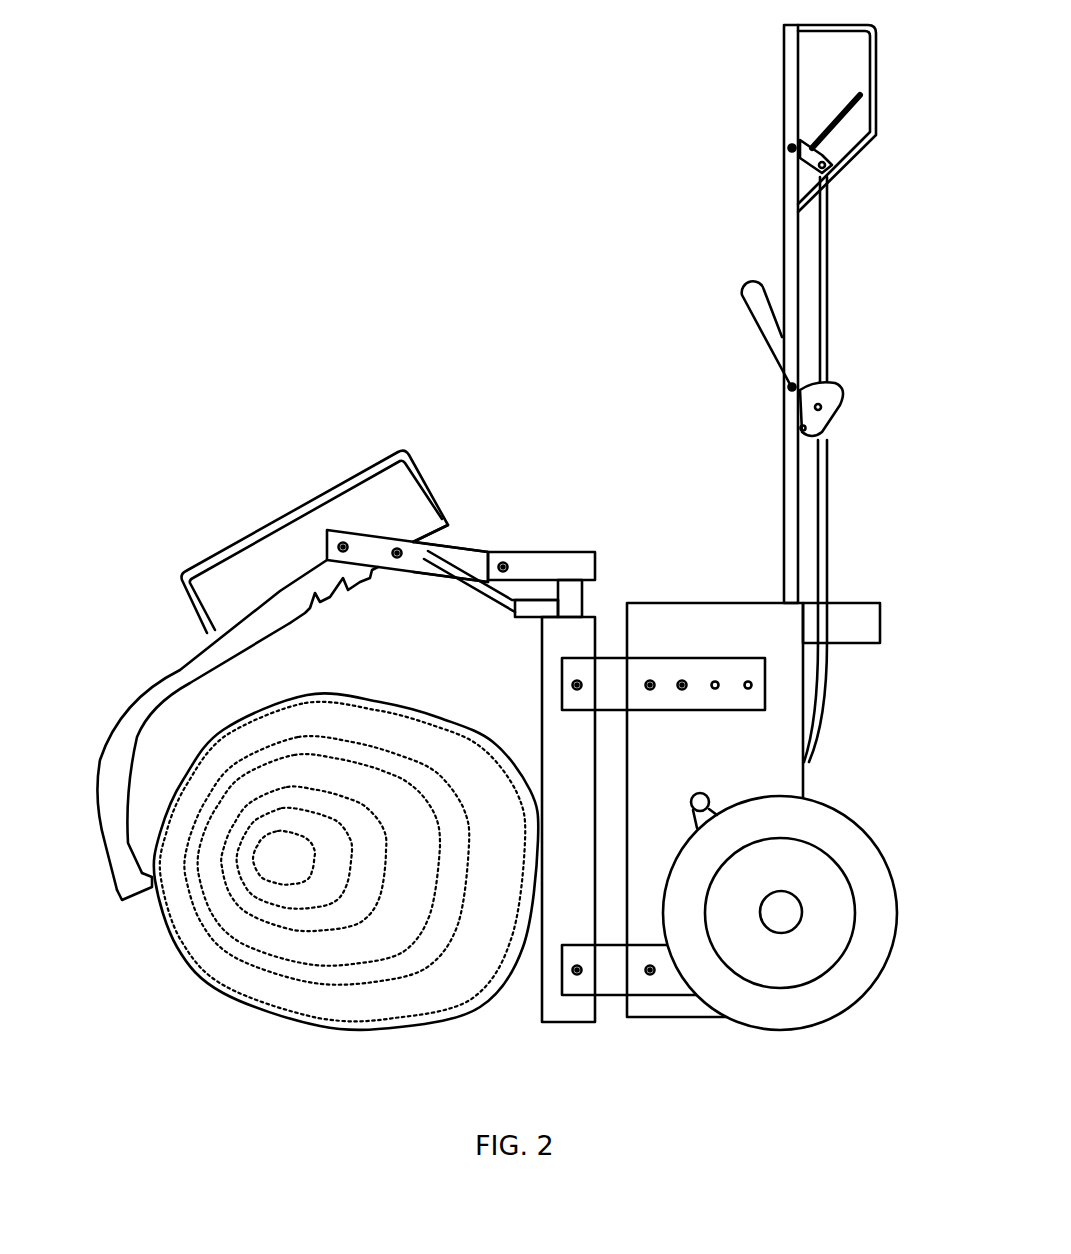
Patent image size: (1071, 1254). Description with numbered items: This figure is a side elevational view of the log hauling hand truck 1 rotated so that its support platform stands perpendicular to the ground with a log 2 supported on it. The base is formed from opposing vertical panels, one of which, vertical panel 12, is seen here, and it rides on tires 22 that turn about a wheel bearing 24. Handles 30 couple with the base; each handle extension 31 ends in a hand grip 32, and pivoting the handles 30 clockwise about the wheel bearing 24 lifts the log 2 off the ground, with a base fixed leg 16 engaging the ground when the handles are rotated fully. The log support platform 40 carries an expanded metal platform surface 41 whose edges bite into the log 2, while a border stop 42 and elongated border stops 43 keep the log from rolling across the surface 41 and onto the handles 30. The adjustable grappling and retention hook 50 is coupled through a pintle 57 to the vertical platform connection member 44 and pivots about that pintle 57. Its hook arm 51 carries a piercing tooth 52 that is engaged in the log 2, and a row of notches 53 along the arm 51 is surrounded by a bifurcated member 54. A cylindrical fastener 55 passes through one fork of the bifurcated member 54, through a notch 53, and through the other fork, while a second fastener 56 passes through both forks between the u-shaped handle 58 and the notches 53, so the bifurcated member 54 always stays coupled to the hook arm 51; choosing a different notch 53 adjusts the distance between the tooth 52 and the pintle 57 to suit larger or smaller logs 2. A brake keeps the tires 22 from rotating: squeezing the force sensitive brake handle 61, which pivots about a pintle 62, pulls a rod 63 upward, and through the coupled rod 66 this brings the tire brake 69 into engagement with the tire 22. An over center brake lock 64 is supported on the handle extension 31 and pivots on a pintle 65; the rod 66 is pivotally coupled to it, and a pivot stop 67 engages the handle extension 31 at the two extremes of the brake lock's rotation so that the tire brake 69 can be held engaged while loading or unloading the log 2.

The log hauling hand truck 1 is at (452, 213).
The log 2 is at (410, 847).
The vertical panel 12 is at (737, 757).
The base fixed leg 16 is at (870, 606).
The tire 22 is at (800, 918).
The wheel bearing 24 is at (790, 917).
The handles 30 is at (807, 393).
The handle extension 31 is at (790, 225).
The hand grip 32 is at (876, 118).
The log support platform 40 is at (556, 1034).
The expanded metal platform surface 41 is at (550, 660).
The border stop 42 is at (515, 612).
The elongated border stop 43 is at (468, 585).
The vertical platform connection member 44 is at (580, 543).
The adjustable grappling and retention hook 50 is at (301, 702).
The hook arm 51 is at (140, 690).
The piercing tooth 52 is at (126, 912).
The notches 53 is at (318, 610).
The bifurcated member 54 is at (465, 555).
The cylindrical fastener 55 is at (437, 522).
The second fastener 56 is at (340, 546).
The pintle 57 is at (505, 566).
The u-shaped handle 58 is at (318, 496).
The brake handle 61 is at (830, 128).
The pintle 62 is at (790, 148).
The rod 63 is at (828, 275).
The over center brake lock 64 is at (752, 308).
The pintle 65 is at (786, 390).
The rod 66 is at (828, 500).
The pivot stop 67 is at (845, 420).
The tire brake 69 is at (709, 800).